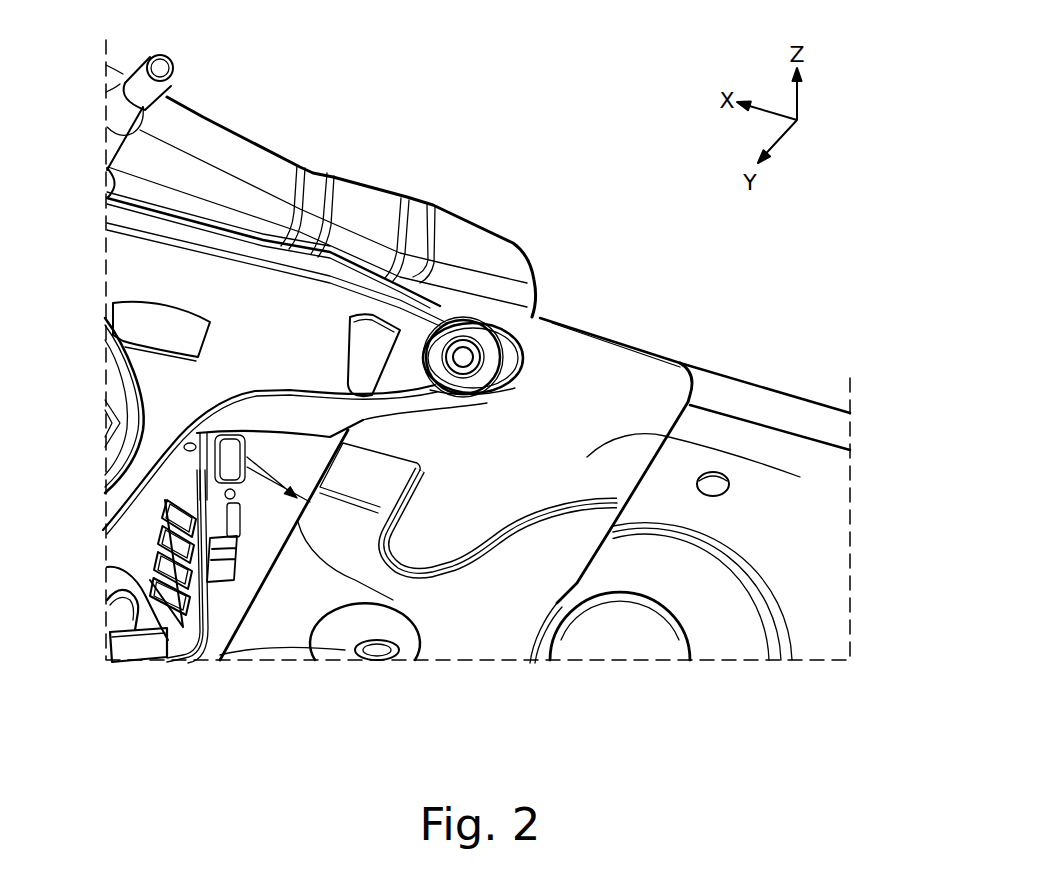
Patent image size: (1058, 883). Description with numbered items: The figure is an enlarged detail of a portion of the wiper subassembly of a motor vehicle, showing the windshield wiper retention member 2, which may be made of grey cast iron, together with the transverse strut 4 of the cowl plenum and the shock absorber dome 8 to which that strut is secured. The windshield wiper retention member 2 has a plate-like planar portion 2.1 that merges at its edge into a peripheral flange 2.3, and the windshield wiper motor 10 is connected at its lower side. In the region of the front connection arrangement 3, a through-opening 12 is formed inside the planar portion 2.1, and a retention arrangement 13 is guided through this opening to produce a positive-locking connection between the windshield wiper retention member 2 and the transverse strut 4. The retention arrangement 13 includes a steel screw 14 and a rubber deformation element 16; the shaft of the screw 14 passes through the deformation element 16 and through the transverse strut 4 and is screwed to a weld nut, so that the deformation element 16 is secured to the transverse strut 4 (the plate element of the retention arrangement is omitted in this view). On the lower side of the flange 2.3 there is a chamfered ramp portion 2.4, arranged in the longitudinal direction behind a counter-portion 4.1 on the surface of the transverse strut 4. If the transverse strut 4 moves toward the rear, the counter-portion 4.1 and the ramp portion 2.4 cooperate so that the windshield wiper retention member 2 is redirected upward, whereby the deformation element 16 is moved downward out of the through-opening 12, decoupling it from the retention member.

The windshield wiper retention member 2 is at (262, 240).
The planar portion 2.1 is at (140, 273).
The peripheral flange 2.3 is at (275, 245).
The ramp portion 2.4 is at (365, 423).
The front connection arrangement 3 is at (542, 317).
The transverse strut 4 is at (800, 477).
The counter-portion 4.1 is at (210, 480).
The shock absorber dome 8 is at (817, 532).
The windshield wiper motor 10 is at (236, 521).
The through-opening 12 is at (390, 345).
The retention arrangement 13 is at (485, 396).
The screw 14 is at (463, 352).
The deformation element 16 is at (493, 350).